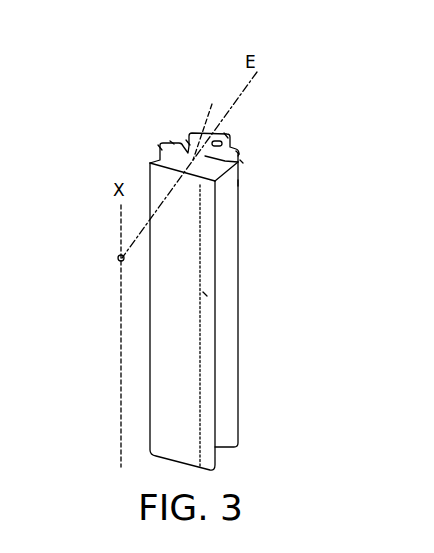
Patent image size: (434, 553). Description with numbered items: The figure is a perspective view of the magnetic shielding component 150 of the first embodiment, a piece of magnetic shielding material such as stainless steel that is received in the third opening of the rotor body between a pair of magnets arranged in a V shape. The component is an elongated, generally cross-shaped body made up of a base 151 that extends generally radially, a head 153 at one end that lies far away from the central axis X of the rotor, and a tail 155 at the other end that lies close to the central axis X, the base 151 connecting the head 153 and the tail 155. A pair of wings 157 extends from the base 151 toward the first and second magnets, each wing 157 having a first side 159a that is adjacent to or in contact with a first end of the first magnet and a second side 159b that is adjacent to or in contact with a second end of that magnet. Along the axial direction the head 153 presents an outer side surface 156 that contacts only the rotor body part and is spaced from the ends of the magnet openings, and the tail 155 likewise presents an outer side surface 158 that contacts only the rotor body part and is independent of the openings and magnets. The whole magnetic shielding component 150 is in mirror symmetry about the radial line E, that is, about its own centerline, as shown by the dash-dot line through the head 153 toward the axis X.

The magnetic shielding component 150 is at (297, 352).
The base 151 is at (212, 123).
The head 153 is at (224, 133).
The tail 155 is at (238, 182).
The outer side surface of the head 156 is at (190, 142).
The wing 157 is at (172, 142).
The outer side surface of the tail 158 is at (205, 295).
The first side of the wing 159a is at (160, 145).
The second side of the wing 159b is at (243, 162).